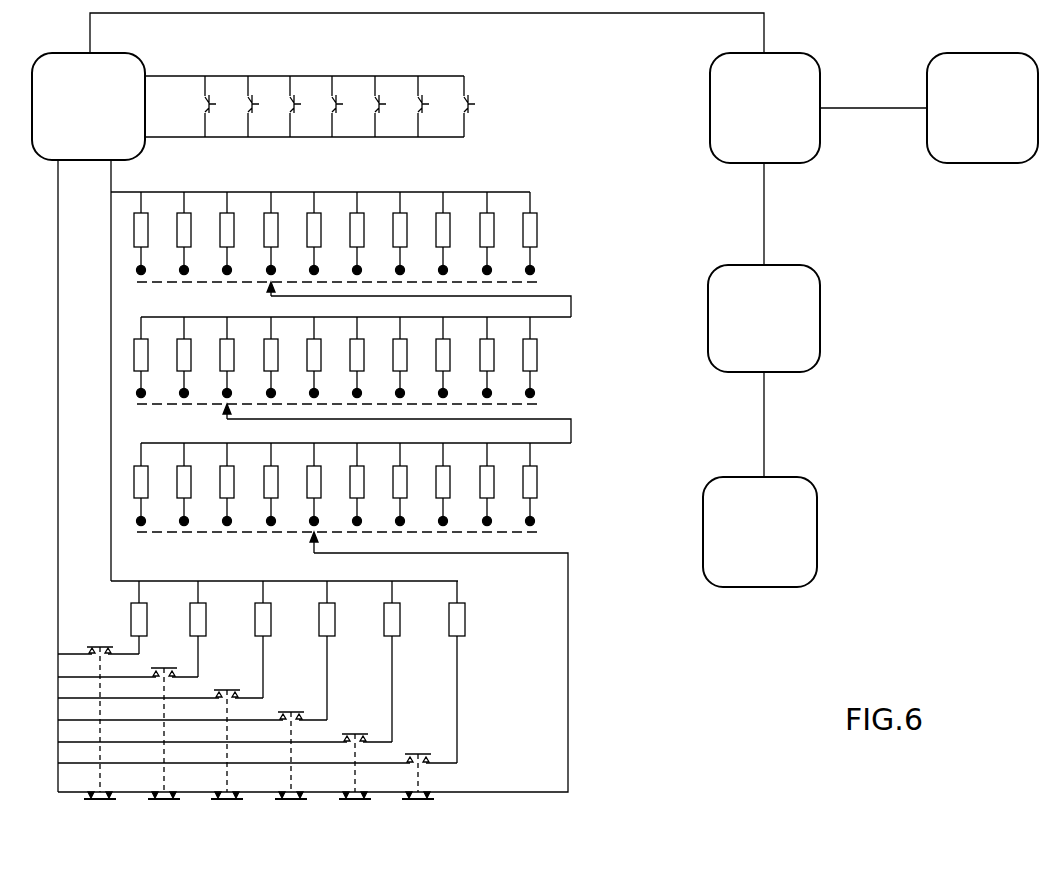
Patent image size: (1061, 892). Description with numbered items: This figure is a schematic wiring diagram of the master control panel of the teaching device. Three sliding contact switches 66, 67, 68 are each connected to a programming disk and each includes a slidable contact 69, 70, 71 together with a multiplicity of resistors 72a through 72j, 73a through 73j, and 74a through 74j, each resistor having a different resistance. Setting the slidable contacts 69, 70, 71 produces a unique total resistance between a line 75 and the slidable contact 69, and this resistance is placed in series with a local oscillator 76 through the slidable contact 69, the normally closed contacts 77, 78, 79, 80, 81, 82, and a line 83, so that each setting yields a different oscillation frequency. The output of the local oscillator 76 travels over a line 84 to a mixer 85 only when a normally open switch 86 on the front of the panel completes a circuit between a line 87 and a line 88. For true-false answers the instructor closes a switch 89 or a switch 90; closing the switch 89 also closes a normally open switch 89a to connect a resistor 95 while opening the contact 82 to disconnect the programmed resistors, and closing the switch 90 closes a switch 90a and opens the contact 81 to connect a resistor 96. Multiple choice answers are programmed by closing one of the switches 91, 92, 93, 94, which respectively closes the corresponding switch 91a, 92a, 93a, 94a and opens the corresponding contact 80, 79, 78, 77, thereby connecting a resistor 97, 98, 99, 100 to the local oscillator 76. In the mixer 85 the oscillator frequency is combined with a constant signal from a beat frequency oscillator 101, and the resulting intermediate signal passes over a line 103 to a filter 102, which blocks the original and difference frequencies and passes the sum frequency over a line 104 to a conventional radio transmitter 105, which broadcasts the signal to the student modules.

The sliding contact switch 66 is at (372, 477).
The sliding contact switch 67 is at (376, 349).
The sliding contact switch 68 is at (364, 226).
The slidable contact 69 is at (311, 549).
The slidable contact 70 is at (225, 410).
The slidable contact 71 is at (268, 292).
The resistor 72a is at (134, 482).
The resistor 72j is at (537, 486).
The resistor 73a is at (150, 352).
The resistor 73j is at (537, 360).
The resistor 74a is at (150, 226).
The resistor 74j is at (537, 236).
The line 75 is at (111, 183).
The local oscillator 76 is at (128, 57).
The normally closed contact 77 is at (418, 797).
The normally closed contact 78 is at (355, 797).
The normally closed contact 79 is at (291, 797).
The normally closed contact 80 is at (227, 797).
The normally closed contact 81 is at (164, 797).
The normally closed contact 82 is at (100, 797).
The line 83 is at (58, 250).
The line 84 is at (318, 10).
The mixer 85 is at (710, 99).
The normally open switch 86 is at (472, 104).
The line 87 is at (160, 78).
The line 88 is at (180, 137).
The switch 89 is at (220, 106).
The switch 90 is at (263, 106).
The switch 91 is at (305, 106).
The switch 92 is at (347, 106).
The switch 93 is at (390, 106).
The switch 94 is at (433, 106).
The normally open switch 89a is at (106, 647).
The normally open switch 90a is at (170, 668).
The normally open switch 91a is at (232, 690).
The normally open switch 92a is at (296, 712).
The normally open switch 93a is at (360, 734).
The normally open switch 94a is at (423, 754).
The resistor 95 is at (147, 613).
The resistor 96 is at (206, 613).
The resistor 97 is at (271, 613).
The resistor 98 is at (335, 613).
The resistor 99 is at (400, 613).
The resistor 100 is at (465, 613).
The beat frequency oscillator 101 is at (927, 78).
The filter 102 is at (815, 308).
The line 103 is at (764, 210).
The line 104 is at (764, 418).
The radio transmitter 105 is at (812, 495).